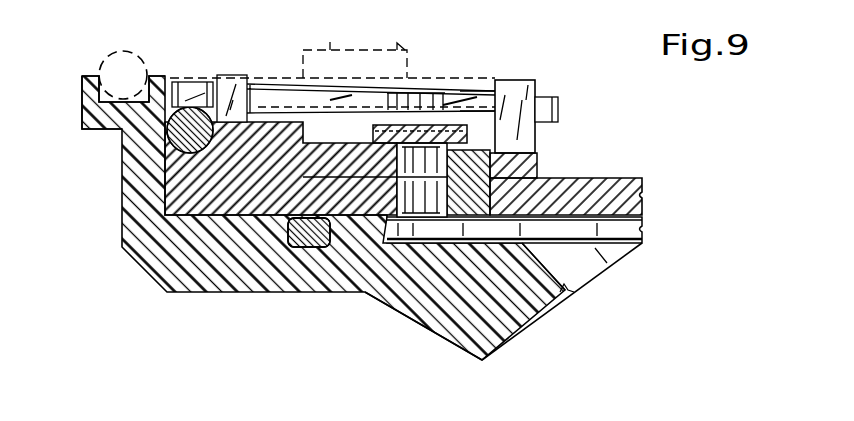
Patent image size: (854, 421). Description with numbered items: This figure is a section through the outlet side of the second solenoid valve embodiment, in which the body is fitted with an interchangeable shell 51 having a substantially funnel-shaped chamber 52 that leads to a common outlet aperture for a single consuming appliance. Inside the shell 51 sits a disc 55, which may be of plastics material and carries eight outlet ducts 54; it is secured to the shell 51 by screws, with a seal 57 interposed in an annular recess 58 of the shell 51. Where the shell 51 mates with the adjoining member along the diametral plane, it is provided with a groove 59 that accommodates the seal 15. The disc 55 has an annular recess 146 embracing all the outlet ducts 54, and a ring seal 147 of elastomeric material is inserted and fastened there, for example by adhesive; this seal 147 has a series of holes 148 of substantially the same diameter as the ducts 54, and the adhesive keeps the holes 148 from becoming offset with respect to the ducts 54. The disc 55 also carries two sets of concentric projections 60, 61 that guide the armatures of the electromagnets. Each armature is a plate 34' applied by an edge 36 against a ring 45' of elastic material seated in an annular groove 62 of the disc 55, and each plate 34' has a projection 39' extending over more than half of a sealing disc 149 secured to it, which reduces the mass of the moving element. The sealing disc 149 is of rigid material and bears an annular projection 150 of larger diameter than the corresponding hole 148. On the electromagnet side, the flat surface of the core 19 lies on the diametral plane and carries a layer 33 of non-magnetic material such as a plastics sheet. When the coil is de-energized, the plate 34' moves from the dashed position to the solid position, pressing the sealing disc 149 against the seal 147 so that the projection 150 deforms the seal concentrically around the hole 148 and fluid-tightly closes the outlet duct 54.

The seal 15 is at (137, 62).
The edge of the plate 36 is at (183, 82).
The concentric projection 60 is at (227, 76).
The ring seal 147 is at (305, 143).
The layer of non-magnetic material 33 is at (330, 50).
The core 19 is at (412, 100).
The plate 34' is at (415, 60).
The projection 39' is at (509, 61).
The concentric projection 61 is at (480, 143).
The annular projection 150 is at (540, 93).
The holes 148 is at (495, 176).
The annular recess 146 is at (540, 178).
The disc 55 is at (623, 180).
The outlet ducts 54 is at (462, 250).
The funnel-shaped chamber 52 is at (514, 300).
The shell 51 is at (386, 303).
The seal 57 is at (307, 248).
The annular recess 58 is at (290, 252).
The groove 59 is at (130, 128).
The ring of elastic material 45' is at (230, 168).
The annular groove 62 is at (172, 193).
The sealing disc 149 is at (375, 129).